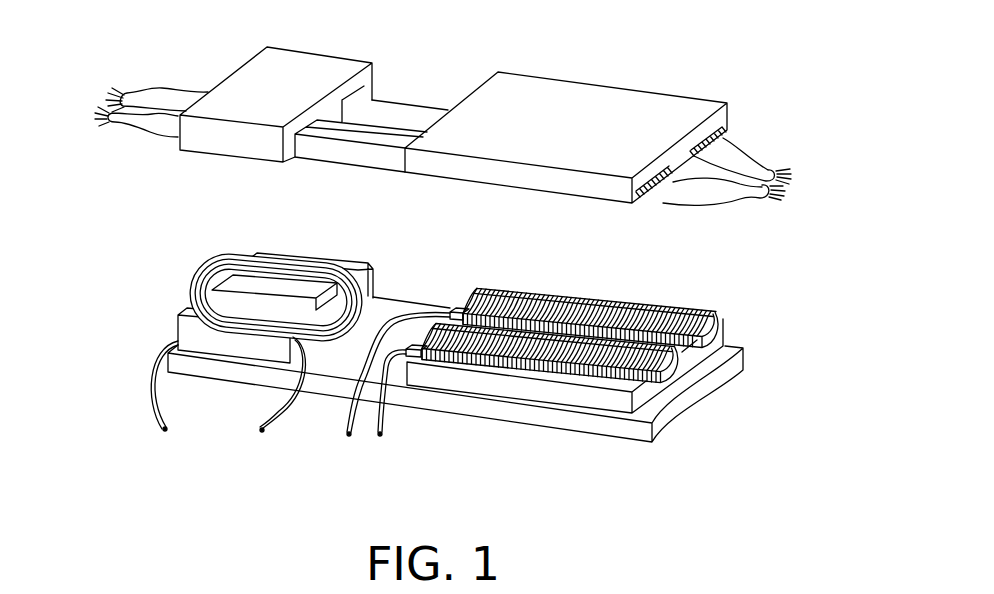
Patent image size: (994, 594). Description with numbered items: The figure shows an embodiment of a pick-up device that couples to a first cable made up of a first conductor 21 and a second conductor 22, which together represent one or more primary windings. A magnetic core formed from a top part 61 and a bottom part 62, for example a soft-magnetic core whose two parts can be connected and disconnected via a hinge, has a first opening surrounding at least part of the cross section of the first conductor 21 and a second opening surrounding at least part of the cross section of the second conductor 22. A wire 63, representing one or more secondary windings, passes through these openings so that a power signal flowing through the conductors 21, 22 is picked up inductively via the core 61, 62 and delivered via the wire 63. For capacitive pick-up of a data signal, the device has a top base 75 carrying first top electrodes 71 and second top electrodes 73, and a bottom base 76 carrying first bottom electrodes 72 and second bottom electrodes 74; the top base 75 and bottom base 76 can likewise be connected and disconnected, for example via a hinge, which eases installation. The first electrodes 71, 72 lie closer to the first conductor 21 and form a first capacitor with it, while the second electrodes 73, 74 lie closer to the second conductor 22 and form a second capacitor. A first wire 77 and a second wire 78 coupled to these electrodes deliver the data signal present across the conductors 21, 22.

The first conductor 21 is at (146, 100).
The second conductor 22 is at (141, 120).
The top part of magnetic core 61 is at (303, 72).
The bottom part of magnetic core 62 is at (190, 313).
The wire 63 is at (166, 432).
The first top electrode 71 is at (727, 142).
The first bottom electrode 72 is at (708, 342).
The second top electrode 73 is at (649, 200).
The second bottom electrode 74 is at (660, 375).
The top base 75 is at (597, 105).
The bottom base 76 is at (538, 392).
The first wire 77 is at (348, 437).
The second wire 78 is at (379, 437).